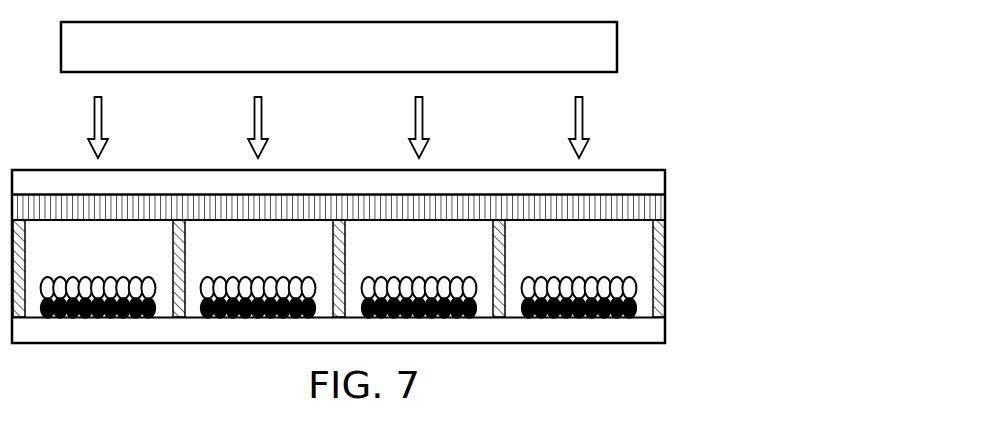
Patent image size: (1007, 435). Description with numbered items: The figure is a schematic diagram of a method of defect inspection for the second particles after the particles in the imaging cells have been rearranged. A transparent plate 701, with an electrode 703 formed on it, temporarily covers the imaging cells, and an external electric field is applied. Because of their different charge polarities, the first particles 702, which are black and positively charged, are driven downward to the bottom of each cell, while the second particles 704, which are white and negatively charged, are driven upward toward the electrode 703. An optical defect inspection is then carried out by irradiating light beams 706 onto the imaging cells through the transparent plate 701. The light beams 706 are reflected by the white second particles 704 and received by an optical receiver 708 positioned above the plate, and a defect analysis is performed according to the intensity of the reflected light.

The transparent plate 701 is at (660, 183).
The first particles 702 is at (633, 305).
The electrode 703 is at (660, 204).
The second particles 704 is at (630, 287).
The light beams 706 is at (102, 115).
The optical receiver 708 is at (603, 47).